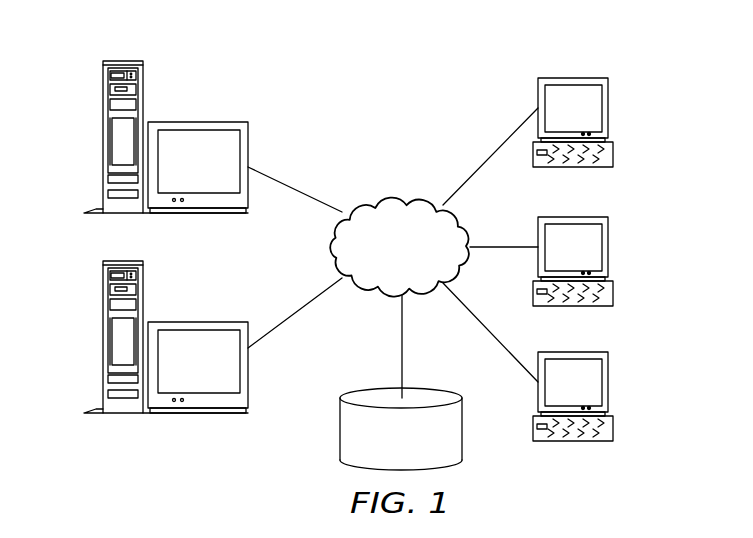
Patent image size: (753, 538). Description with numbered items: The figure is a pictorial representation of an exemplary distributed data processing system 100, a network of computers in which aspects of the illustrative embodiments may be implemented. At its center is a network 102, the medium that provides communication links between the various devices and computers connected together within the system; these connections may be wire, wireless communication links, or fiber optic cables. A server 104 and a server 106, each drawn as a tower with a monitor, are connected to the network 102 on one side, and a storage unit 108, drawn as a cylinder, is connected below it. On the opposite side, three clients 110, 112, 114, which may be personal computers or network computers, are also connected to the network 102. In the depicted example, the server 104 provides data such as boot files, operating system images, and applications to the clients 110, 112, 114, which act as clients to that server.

The distributed data processing system 100 is at (455, 66).
The network 102 is at (373, 198).
The server 104 is at (103, 135).
The server 106 is at (103, 340).
The storage unit 108 is at (340, 427).
The client 110 is at (608, 108).
The client 112 is at (608, 247).
The client 114 is at (608, 380).